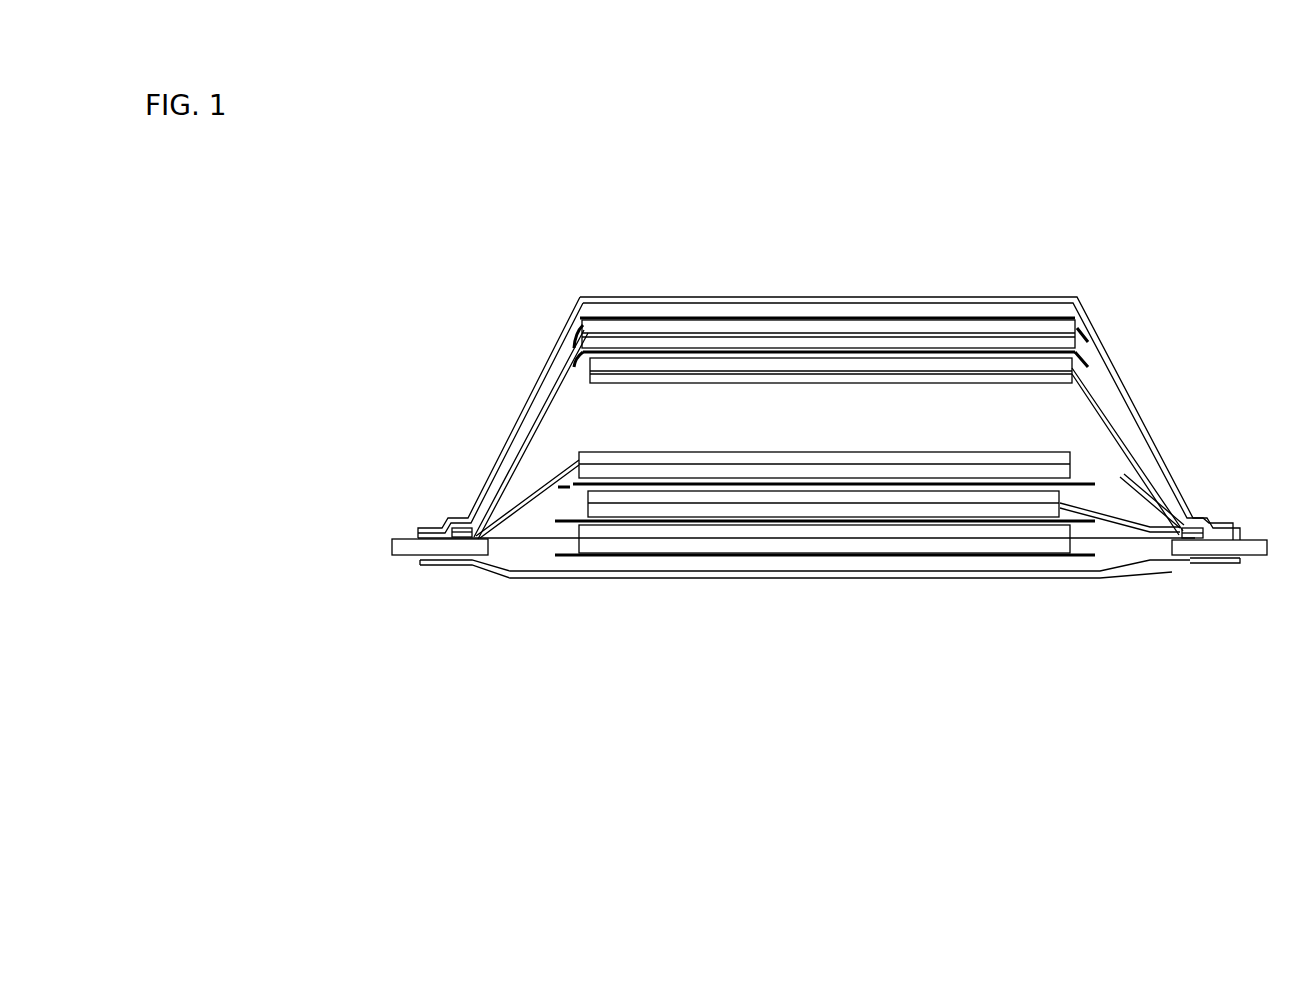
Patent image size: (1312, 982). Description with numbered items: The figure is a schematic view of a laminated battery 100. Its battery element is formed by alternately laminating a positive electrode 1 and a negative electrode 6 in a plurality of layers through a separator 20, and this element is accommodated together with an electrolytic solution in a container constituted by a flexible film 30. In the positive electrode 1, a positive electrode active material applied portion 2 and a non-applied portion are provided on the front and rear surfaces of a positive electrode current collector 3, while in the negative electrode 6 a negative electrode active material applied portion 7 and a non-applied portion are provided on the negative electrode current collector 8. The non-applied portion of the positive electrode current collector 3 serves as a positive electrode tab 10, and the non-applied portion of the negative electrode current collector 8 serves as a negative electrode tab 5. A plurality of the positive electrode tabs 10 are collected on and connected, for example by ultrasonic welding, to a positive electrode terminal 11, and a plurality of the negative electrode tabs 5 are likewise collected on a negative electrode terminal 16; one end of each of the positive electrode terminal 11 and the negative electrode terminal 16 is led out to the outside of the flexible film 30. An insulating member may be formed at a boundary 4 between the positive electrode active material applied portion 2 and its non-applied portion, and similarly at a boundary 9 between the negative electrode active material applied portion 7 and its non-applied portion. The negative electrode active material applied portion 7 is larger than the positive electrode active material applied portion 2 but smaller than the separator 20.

The laminated battery 100 is at (902, 233).
The negative electrode active material applied portion 7 is at (733, 347).
The positive electrode active material applied portion 2 is at (920, 367).
The positive electrode 1 is at (590, 378).
The boundary 9 is at (578, 330).
The negative electrode 6 is at (1070, 463).
The boundary 4 is at (1062, 502).
The separator 20 is at (568, 557).
The positive electrode current collector 3 is at (1140, 475).
The negative electrode current collector 8 is at (518, 507).
The flexible film 30 is at (715, 577).
The negative electrode terminal 16 is at (405, 555).
The negative electrode tab 5 is at (470, 540).
The positive electrode terminal 11 is at (1263, 547).
The positive electrode tab 10 is at (1190, 545).